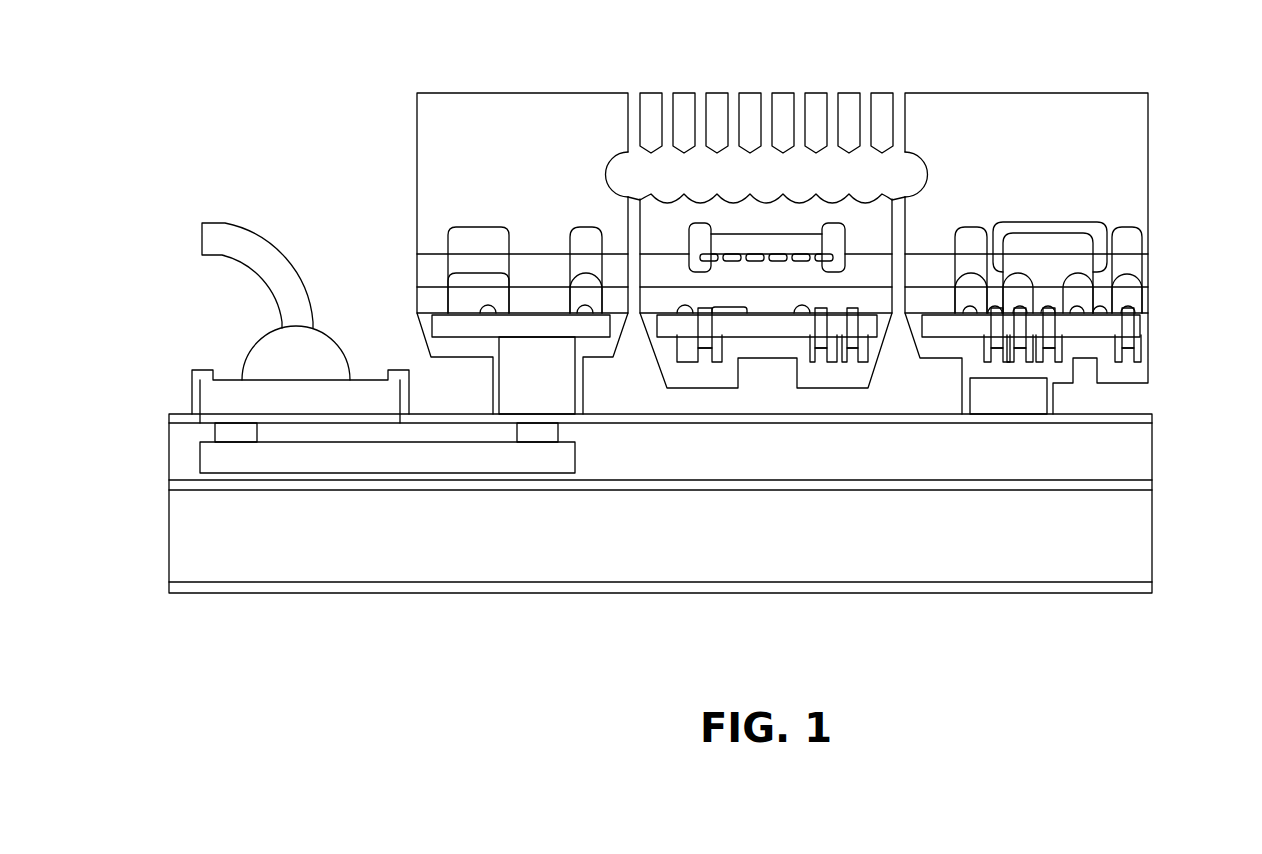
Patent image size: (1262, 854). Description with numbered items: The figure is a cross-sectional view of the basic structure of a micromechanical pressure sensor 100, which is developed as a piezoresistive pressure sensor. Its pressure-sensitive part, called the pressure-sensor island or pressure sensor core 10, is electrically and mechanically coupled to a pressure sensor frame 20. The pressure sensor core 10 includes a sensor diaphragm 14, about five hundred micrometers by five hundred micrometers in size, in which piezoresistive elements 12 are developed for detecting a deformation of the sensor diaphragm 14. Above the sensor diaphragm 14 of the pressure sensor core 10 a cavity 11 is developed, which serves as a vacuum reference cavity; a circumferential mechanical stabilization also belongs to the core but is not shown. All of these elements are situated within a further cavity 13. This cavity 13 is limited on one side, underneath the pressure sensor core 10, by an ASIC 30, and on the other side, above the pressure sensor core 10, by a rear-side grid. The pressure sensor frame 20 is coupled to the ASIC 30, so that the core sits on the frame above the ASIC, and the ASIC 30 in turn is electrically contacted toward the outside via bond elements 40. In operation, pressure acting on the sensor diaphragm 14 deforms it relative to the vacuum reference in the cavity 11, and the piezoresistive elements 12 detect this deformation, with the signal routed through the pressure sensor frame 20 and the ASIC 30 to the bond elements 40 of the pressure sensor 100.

The micromechanical pressure sensor 100 is at (240, 616).
The pressure sensor core 10 is at (903, 341).
The cavity 11 is at (735, 242).
The piezoresistive elements 12 is at (815, 310).
The cavity 13 is at (875, 180).
The sensor diaphragm 14 is at (863, 277).
The pressure sensor frame 20 is at (444, 93).
The ASIC 30 is at (1200, 415).
The bond elements 40 is at (211, 222).